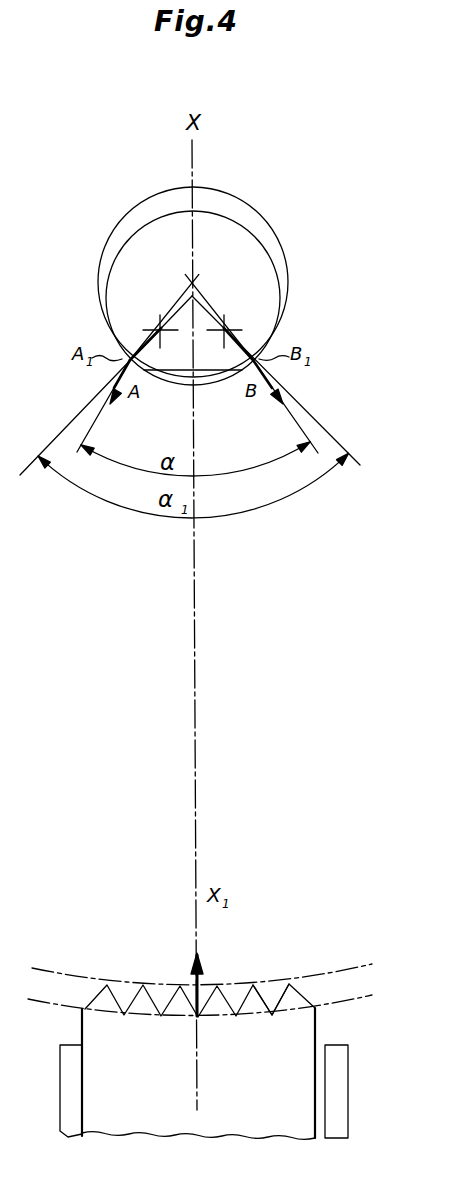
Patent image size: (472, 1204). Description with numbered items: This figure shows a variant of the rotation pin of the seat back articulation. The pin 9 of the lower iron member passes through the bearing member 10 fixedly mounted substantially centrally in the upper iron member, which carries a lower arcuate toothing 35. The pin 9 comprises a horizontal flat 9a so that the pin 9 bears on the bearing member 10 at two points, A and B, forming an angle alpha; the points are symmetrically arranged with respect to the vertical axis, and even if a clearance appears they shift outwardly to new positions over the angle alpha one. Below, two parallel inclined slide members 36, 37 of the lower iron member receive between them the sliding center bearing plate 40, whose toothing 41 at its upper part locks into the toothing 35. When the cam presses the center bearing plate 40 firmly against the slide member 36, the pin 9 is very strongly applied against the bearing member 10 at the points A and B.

The pin 9 is at (265, 275).
The horizontal flat 9a is at (208, 372).
The bearing member 10 is at (247, 201).
The lower arcuate toothing 35 is at (277, 984).
The inclined slide member 36 is at (67, 1080).
The inclined slide member 37 is at (344, 1068).
The sliding center bearing plate 40 is at (100, 1038).
The toothing 41 is at (250, 997).